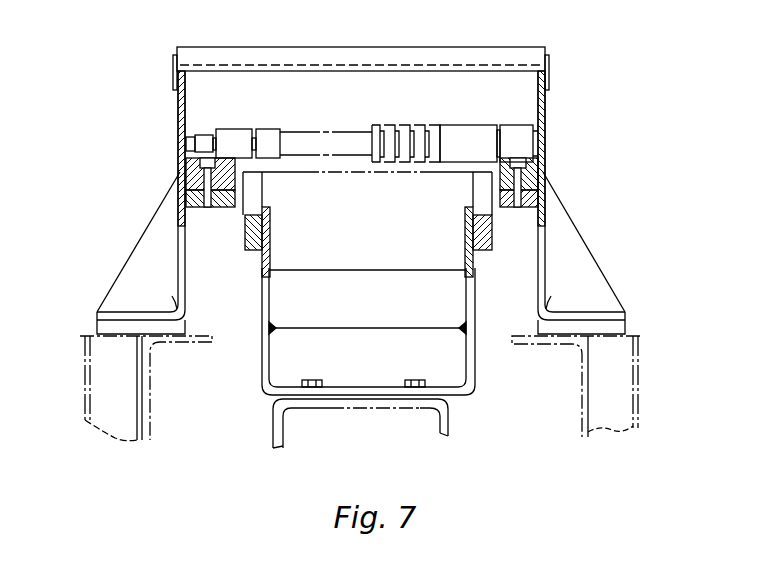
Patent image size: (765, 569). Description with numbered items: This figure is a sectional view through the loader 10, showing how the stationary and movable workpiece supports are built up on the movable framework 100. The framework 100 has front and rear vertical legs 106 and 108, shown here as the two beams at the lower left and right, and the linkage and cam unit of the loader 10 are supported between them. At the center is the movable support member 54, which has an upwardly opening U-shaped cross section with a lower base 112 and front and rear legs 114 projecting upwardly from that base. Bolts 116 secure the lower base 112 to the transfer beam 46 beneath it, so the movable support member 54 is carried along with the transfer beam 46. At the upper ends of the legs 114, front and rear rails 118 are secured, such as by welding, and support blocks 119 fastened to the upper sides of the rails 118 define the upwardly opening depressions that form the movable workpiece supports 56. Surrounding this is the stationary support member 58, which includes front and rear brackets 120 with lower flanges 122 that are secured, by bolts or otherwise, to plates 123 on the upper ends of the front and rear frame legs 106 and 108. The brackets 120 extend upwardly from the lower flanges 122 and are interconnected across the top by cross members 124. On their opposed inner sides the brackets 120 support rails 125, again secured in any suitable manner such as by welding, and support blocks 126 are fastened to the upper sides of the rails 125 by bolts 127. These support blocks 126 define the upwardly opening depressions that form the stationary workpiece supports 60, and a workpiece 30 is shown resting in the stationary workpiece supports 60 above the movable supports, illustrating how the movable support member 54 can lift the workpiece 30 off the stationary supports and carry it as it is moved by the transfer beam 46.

The loader 10 is at (578, 58).
The workpiece 30 is at (411, 127).
The transfer beam 46 is at (272, 418).
The movable support member 54 is at (478, 392).
The movable workpiece supports 56 is at (257, 181).
The stationary support member 58 is at (549, 130).
The stationary workpiece supports 60 is at (232, 152).
The movable framework 100 is at (82, 428).
The front vertical leg 106 is at (634, 373).
The rear vertical leg 108 is at (90, 369).
The lower base 112 is at (372, 398).
The legs 114 is at (468, 290).
The bolts 116 is at (418, 380).
The rails 118 is at (253, 251).
The support blocks 119 is at (245, 214).
The brackets 120 is at (178, 96).
The lower flanges 122 is at (121, 312).
The plates 123 is at (112, 328).
The cross members 124 is at (284, 48).
The rails 125 is at (187, 197).
The support blocks 126 is at (187, 167).
The bolts 127 is at (207, 184).